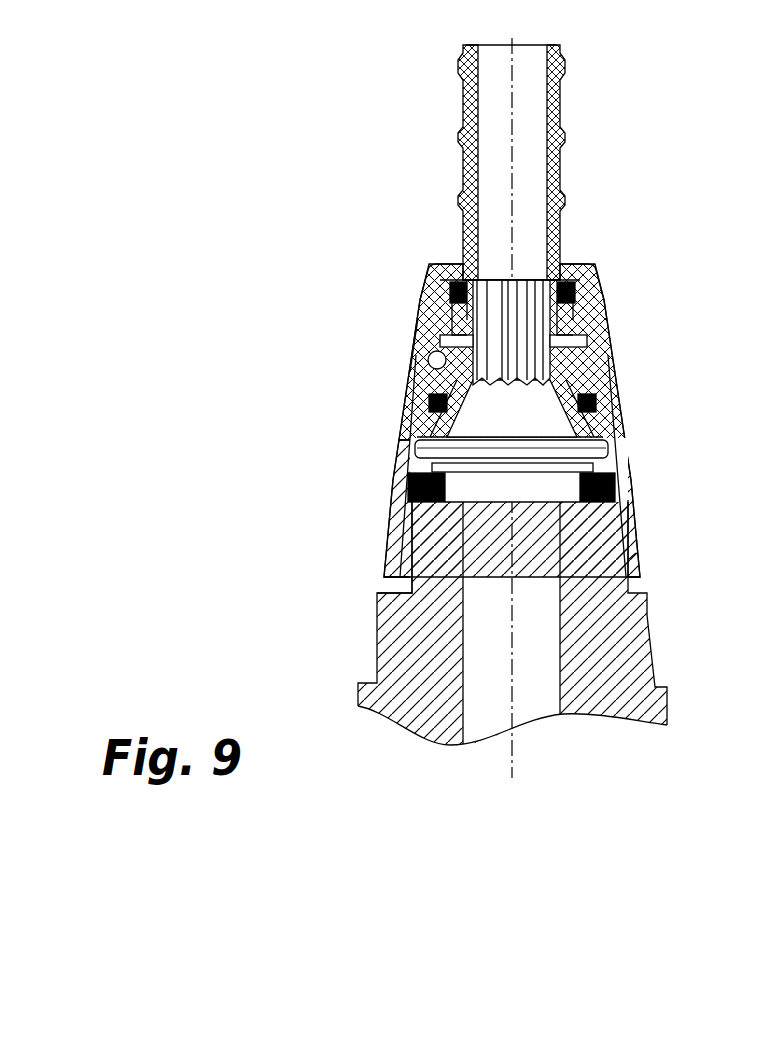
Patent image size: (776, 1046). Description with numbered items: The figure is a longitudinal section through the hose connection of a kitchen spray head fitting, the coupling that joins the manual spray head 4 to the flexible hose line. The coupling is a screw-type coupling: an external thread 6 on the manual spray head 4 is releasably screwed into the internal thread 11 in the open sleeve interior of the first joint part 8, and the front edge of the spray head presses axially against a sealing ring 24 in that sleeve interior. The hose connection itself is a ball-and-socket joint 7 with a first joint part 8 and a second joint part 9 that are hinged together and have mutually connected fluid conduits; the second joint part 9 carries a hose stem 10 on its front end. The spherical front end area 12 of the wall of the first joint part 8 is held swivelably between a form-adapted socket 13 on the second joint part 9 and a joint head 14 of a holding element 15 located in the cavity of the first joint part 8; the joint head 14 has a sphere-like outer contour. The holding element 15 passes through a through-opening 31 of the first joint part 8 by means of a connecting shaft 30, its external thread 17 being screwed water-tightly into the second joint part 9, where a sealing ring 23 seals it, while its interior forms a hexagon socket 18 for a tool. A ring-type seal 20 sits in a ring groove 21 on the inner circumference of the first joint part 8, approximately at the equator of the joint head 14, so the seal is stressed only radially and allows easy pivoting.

The manual spray head 4 is at (674, 697).
The external thread 6 is at (412, 559).
The ball-and-socket joint 7 is at (550, 400).
The first joint part 8 is at (632, 456).
The second joint part 9 is at (603, 282).
The hose stem 10 is at (536, 162).
The internal thread 11 is at (619, 528).
The spherical front end area 12 is at (406, 362).
The socket 13 is at (442, 351).
The joint head 14 is at (500, 430).
The holding element 15 is at (523, 264).
The external thread 17 is at (451, 311).
The hexagon socket 18 is at (503, 294).
The ring-type seal 20 is at (424, 399).
The ring groove 21 is at (608, 400).
The sealing ring 23 is at (449, 262).
The sealing ring 24 is at (397, 453).
The connecting shaft 30 is at (560, 315).
The through-opening 31 is at (571, 369).